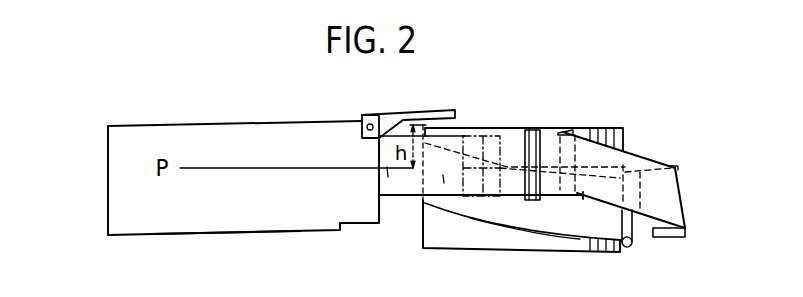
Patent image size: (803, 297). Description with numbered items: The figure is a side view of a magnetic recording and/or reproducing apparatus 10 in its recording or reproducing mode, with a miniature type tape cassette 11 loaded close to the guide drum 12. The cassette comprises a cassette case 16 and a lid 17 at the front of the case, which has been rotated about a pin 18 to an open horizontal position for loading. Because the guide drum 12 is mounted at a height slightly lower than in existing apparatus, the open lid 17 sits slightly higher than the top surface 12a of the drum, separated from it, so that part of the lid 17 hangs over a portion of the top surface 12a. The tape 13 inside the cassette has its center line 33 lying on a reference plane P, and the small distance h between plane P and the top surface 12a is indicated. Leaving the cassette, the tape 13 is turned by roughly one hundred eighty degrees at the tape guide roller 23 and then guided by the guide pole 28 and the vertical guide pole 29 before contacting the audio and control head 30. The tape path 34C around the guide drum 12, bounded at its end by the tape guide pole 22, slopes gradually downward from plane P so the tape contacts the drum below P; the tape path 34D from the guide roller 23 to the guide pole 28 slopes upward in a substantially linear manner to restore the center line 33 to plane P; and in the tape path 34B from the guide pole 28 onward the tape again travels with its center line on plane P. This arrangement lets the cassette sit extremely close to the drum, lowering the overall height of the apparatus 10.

The magnetic recording and/or reproducing apparatus 10 is at (158, 103).
The miniature type tape cassette 11 is at (250, 120).
The guide drum 12 is at (600, 128).
The top surface of the guide drum 12a is at (470, 127).
The tape 13 is at (640, 163).
The cassette case 16 is at (213, 232).
The lid 17 is at (403, 111).
The pin 18 is at (368, 118).
The tape guide pole 22 is at (631, 247).
The tape guide roller 23 is at (669, 238).
The guide pole 28 is at (565, 130).
The vertical guide pole 29 is at (523, 142).
The audio and control head 30 is at (490, 200).
The center line of the tape 33 is at (266, 167).
The tape path 34B is at (407, 197).
The tape path 34C is at (513, 224).
The tape path 34D is at (612, 150).